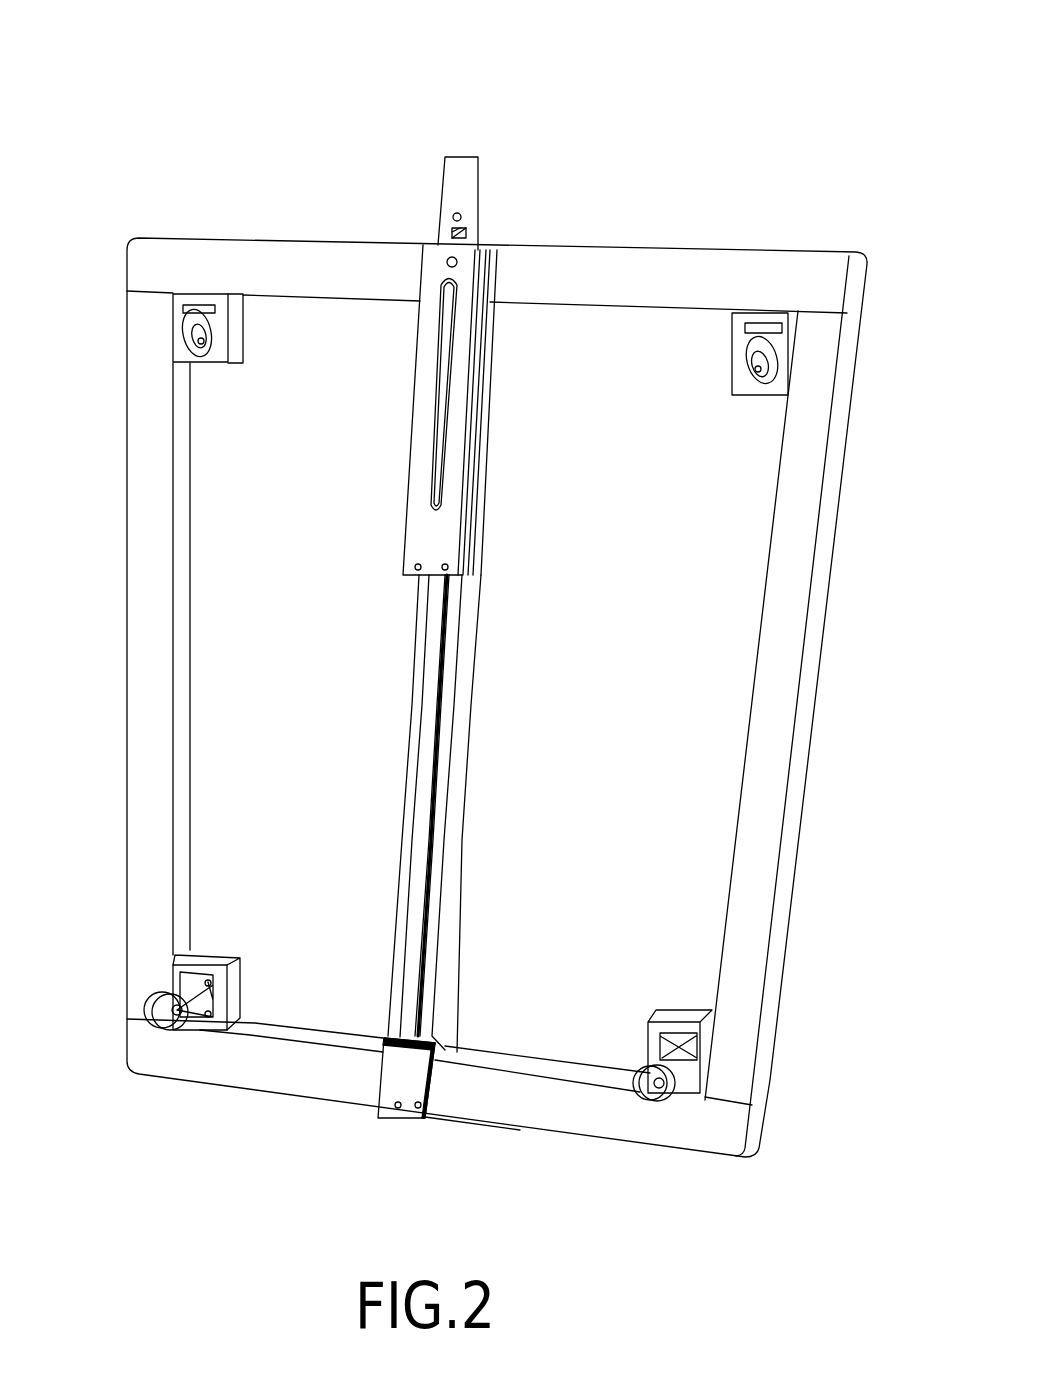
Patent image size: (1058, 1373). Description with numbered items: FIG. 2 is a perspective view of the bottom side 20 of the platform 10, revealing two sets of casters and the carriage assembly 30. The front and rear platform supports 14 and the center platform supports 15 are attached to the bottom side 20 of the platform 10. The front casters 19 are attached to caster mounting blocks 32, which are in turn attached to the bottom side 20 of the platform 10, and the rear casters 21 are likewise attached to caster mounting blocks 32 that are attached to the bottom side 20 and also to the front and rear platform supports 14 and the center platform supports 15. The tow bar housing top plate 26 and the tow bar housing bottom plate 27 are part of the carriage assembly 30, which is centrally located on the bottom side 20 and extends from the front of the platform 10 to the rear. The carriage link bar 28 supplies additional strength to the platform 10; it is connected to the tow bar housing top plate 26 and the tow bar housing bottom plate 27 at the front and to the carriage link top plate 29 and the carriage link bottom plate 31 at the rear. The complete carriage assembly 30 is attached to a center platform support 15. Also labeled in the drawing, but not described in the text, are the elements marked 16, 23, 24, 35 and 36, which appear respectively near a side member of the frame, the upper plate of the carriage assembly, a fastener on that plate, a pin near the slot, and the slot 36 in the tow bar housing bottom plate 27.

The platform 10 is at (270, 66).
The front and rear platform supports 14 is at (162, 268).
The center platform supports 15 is at (754, 834).
The side member 16 is at (862, 257).
The front casters 19 is at (197, 332).
The bottom side 20 is at (679, 124).
The rear casters 21 is at (166, 1030).
The mounting plate 23 is at (447, 187).
The fastener 24 is at (463, 238).
The tow bar housing top plate 26 is at (493, 262).
The tow bar housing bottom plate 27 is at (438, 542).
The carriage link bar 28 is at (415, 882).
The carriage link top plate 29 is at (437, 1087).
The carriage assembly 30 is at (381, 491).
The carriage link bottom plate 31 is at (398, 1080).
The caster mounting blocks 32 is at (212, 350).
The pin 35 is at (433, 265).
The slot 36 is at (442, 420).